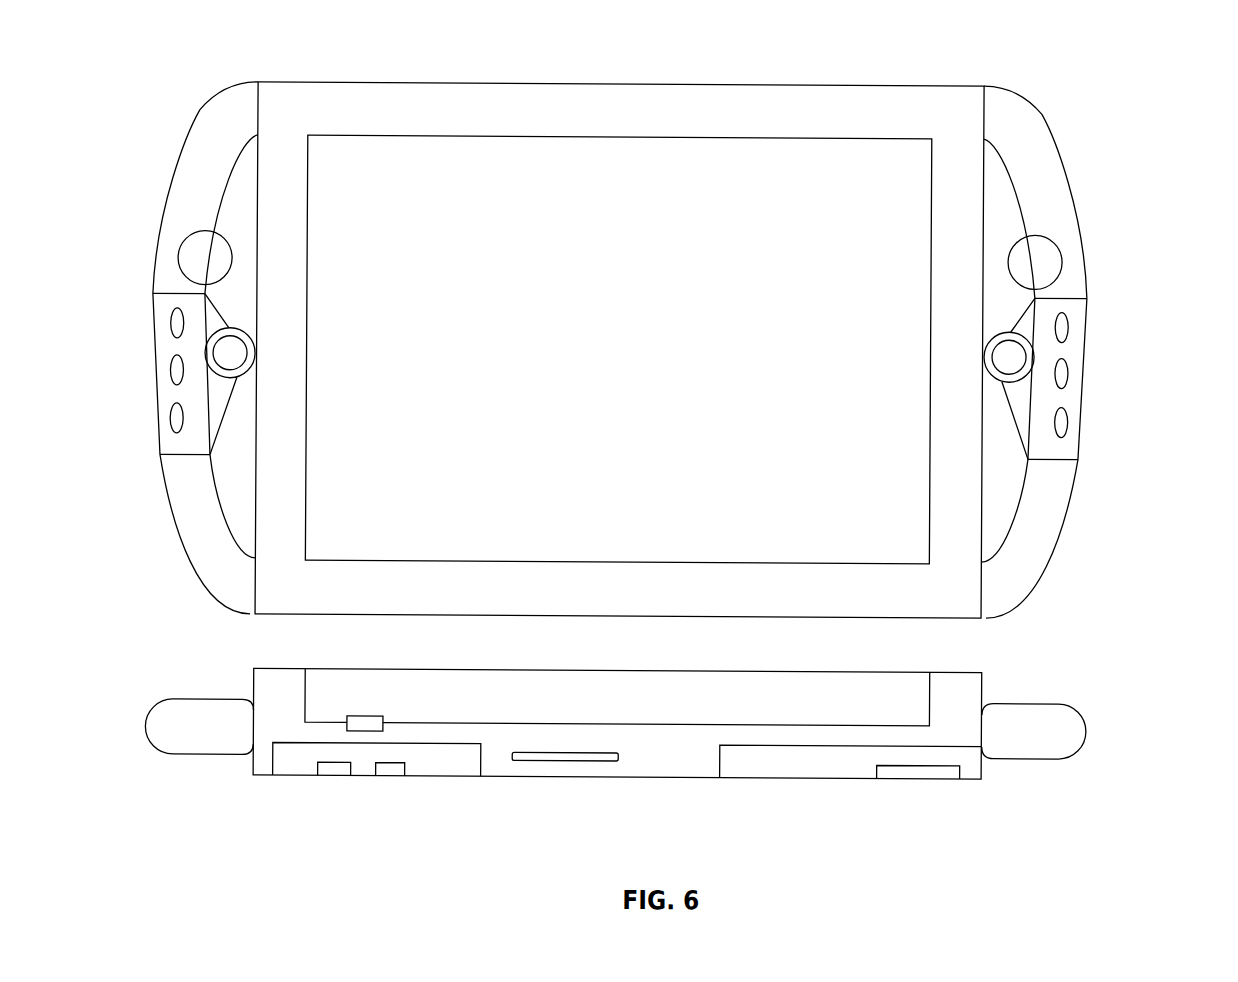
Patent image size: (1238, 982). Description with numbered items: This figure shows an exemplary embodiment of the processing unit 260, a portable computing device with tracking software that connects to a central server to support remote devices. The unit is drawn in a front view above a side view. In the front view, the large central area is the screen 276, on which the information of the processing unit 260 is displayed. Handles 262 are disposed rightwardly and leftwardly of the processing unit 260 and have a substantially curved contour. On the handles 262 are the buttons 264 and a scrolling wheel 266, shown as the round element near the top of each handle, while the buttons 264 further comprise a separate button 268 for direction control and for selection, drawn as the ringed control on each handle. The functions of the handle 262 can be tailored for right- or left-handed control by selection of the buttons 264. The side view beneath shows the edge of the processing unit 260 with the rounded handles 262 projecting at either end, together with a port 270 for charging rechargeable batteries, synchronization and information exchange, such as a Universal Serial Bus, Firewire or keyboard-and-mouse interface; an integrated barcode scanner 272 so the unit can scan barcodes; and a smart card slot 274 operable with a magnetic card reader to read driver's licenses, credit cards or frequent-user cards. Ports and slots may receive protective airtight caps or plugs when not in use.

The processing unit 260 is at (868, 117).
The handles 262 is at (1043, 498).
The buttons 264 is at (1062, 330).
The scrolling wheel 266 is at (1046, 259).
The separate button 268 is at (1010, 355).
The port 270 is at (924, 778).
The barcode scanner 272 is at (352, 726).
The smart card slot 274 is at (524, 756).
The screen 276 is at (577, 446).